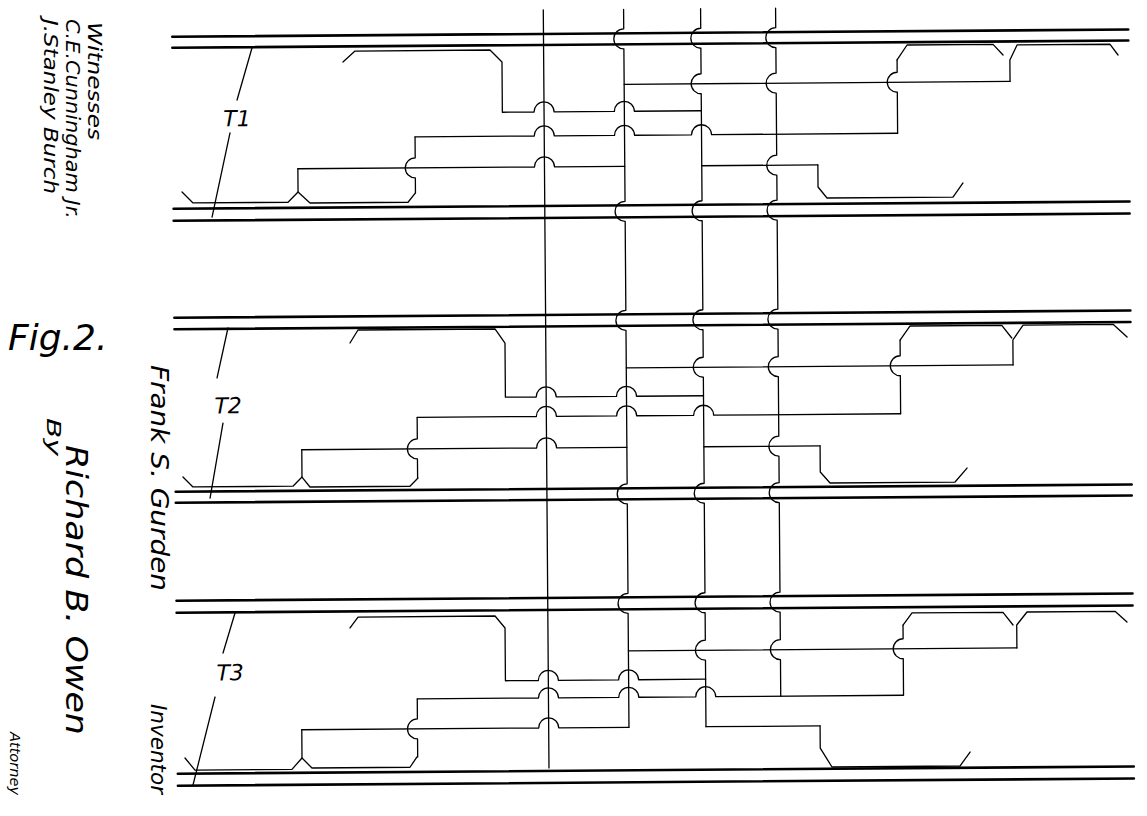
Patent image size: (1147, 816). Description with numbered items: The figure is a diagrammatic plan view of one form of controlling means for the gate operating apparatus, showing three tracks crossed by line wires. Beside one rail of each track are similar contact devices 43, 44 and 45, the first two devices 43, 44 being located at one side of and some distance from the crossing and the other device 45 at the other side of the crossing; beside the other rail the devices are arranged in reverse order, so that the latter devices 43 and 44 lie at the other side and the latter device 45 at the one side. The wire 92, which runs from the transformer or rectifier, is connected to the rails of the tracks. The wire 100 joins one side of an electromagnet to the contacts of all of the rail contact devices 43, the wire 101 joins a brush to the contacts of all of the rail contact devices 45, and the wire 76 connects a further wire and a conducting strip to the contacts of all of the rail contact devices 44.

The contact device 43 is at (1052, 631).
The contact device 44 is at (357, 486).
The contact device 45 is at (436, 335).
The wire 92 is at (545, 556).
The wire 100 is at (624, 553).
The wire 101 is at (704, 557).
The wire 76 is at (779, 549).